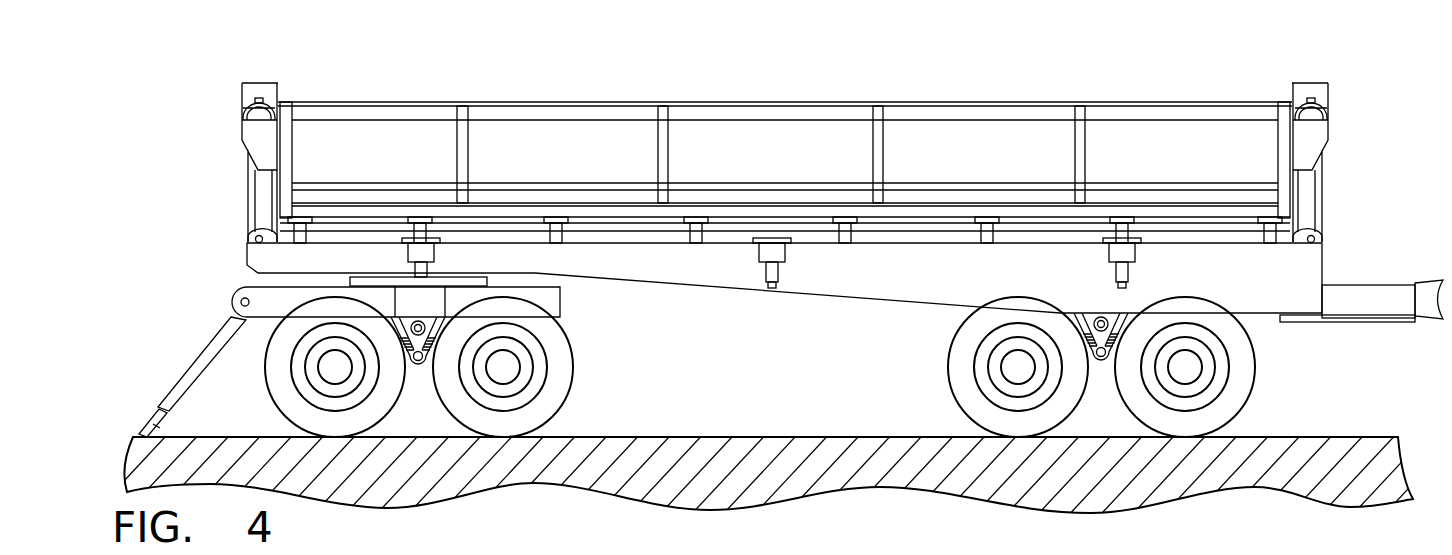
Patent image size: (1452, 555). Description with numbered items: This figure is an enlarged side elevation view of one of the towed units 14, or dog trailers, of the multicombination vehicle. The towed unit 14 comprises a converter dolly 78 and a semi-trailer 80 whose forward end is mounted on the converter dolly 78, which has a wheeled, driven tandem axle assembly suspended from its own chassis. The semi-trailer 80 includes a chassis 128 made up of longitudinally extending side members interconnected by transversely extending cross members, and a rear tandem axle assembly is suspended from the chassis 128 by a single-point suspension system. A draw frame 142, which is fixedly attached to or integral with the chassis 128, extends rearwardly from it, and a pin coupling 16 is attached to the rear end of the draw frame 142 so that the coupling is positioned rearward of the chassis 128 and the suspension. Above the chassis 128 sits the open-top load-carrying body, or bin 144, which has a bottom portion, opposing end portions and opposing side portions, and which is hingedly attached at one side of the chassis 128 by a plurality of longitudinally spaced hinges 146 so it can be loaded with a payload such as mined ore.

The towed unit 14 is at (730, 146).
The pin coupling 16 is at (1436, 270).
The converter dolly 78 is at (574, 309).
The semi-trailer 80 is at (785, 146).
The chassis 128 is at (705, 294).
The draw frame 142 is at (1416, 340).
The load-carrying body 144 is at (692, 98).
The hinges 146 is at (442, 251).